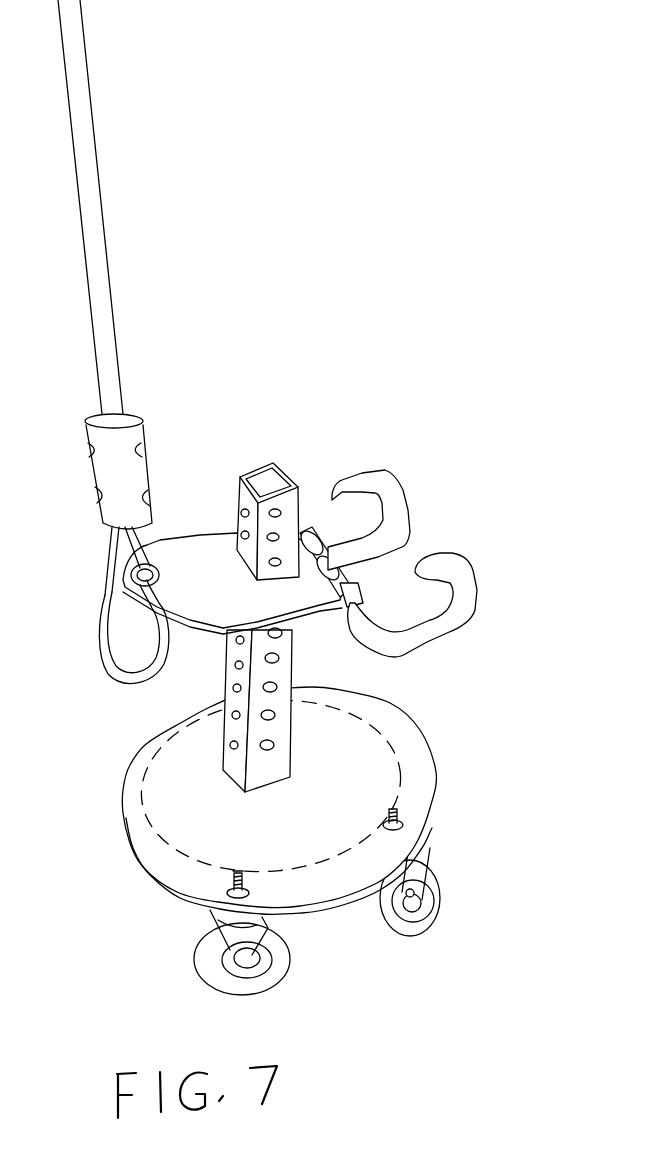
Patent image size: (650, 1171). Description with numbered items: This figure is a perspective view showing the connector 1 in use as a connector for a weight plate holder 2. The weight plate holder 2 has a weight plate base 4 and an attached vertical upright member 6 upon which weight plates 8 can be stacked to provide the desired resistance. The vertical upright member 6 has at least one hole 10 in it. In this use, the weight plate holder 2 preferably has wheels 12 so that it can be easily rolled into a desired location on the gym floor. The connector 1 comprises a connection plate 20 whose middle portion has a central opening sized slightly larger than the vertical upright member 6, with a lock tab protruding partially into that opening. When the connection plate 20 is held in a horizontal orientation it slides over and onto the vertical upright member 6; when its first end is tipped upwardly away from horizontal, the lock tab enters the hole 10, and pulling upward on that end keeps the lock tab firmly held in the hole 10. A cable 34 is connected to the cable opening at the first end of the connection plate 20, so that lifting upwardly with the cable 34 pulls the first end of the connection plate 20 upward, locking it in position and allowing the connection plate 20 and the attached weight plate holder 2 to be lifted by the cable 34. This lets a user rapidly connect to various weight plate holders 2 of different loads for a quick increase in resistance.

The connector 1 is at (189, 534).
The weight plate holder 2 is at (430, 738).
The weight plate base 4 is at (422, 785).
The vertical upright member 6 is at (232, 675).
The weight plates 8 is at (160, 820).
The hole 10 is at (267, 685).
The wheels 12 is at (445, 883).
The connection plate 20 is at (207, 537).
The cable 34 is at (100, 303).